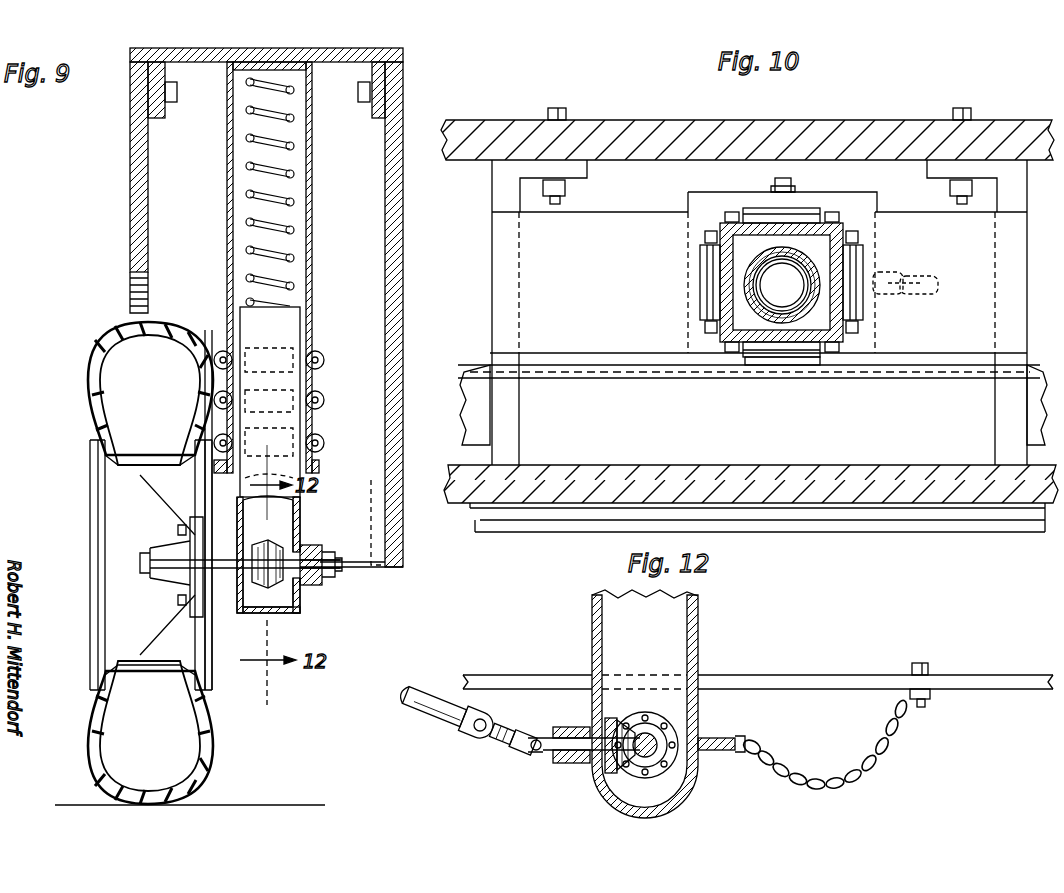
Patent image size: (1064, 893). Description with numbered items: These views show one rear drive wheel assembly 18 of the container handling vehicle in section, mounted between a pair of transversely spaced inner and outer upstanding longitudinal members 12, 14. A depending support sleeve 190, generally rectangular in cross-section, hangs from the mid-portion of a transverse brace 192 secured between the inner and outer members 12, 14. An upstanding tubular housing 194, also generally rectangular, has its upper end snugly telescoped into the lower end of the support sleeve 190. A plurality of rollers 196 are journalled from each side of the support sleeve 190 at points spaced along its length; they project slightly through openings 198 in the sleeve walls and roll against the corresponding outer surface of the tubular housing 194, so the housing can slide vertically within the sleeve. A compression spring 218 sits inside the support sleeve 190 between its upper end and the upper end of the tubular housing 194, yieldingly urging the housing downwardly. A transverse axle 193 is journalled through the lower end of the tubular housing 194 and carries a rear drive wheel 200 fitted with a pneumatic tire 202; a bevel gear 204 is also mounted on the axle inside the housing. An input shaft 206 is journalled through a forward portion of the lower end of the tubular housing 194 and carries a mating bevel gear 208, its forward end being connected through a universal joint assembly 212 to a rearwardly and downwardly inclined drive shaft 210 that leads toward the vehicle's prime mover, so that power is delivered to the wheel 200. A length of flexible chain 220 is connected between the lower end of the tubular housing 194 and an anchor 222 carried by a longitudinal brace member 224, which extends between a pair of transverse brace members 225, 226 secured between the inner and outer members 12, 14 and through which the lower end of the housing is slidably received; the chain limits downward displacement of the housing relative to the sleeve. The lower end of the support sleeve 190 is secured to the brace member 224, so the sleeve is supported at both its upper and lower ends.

In FIG. 9, the inner upstanding longitudinal member 12 is at (395, 303).
In FIG. 10, the inner upstanding longitudinal member 12 is at (670, 135).
In FIG. 9, the outer upstanding longitudinal member 14 is at (132, 208).
In FIG. 10, the outer upstanding longitudinal member 14 is at (770, 483).
In FIG. 9, the rear drive wheel assembly 18 is at (213, 322).
In FIG. 9, the support sleeve 190 is at (312, 232).
In FIG. 10, the support sleeve 190 is at (730, 305).
In FIG. 9, the transverse brace 192 is at (345, 56).
In FIG. 9, the transverse axle 193 is at (205, 595).
In FIG. 9, the tubular housing 194 is at (300, 600).
In FIG. 10, the tubular housing 194 is at (815, 308).
In FIG. 12, the tubular housing 194 is at (620, 805).
In FIG. 9, the rollers 196 is at (326, 363).
In FIG. 10, the rollers 196 is at (720, 290).
In FIG. 9, the openings 198 is at (233, 348).
In FIG. 9, the rear drive wheel 200 is at (162, 470).
In FIG. 9, the pneumatic tire 202 is at (88, 396).
In FIG. 9, the bevel gear 204 is at (268, 540).
In FIG. 12, the input shaft 206 is at (545, 748).
In FIG. 12, the bevel gear 208 is at (605, 722).
In FIG. 12, the drive shaft 210 is at (432, 725).
In FIG. 12, the universal joint assembly 212 is at (490, 752).
In FIG. 9, the compression spring 218 is at (250, 165).
In FIG. 10, the compression spring 218 is at (725, 262).
In FIG. 10, the flexible chain 220 is at (915, 276).
In FIG. 12, the flexible chain 220 is at (870, 762).
In FIG. 12, the anchor 222 is at (945, 700).
In FIG. 9, the longitudinal brace member 224 is at (370, 562).
In FIG. 10, the longitudinal brace member 224 is at (945, 345).
In FIG. 12, the longitudinal brace member 224 is at (793, 683).
In FIG. 10, the transverse brace member 225 is at (512, 432).
In FIG. 10, the transverse brace member 226 is at (1005, 430).